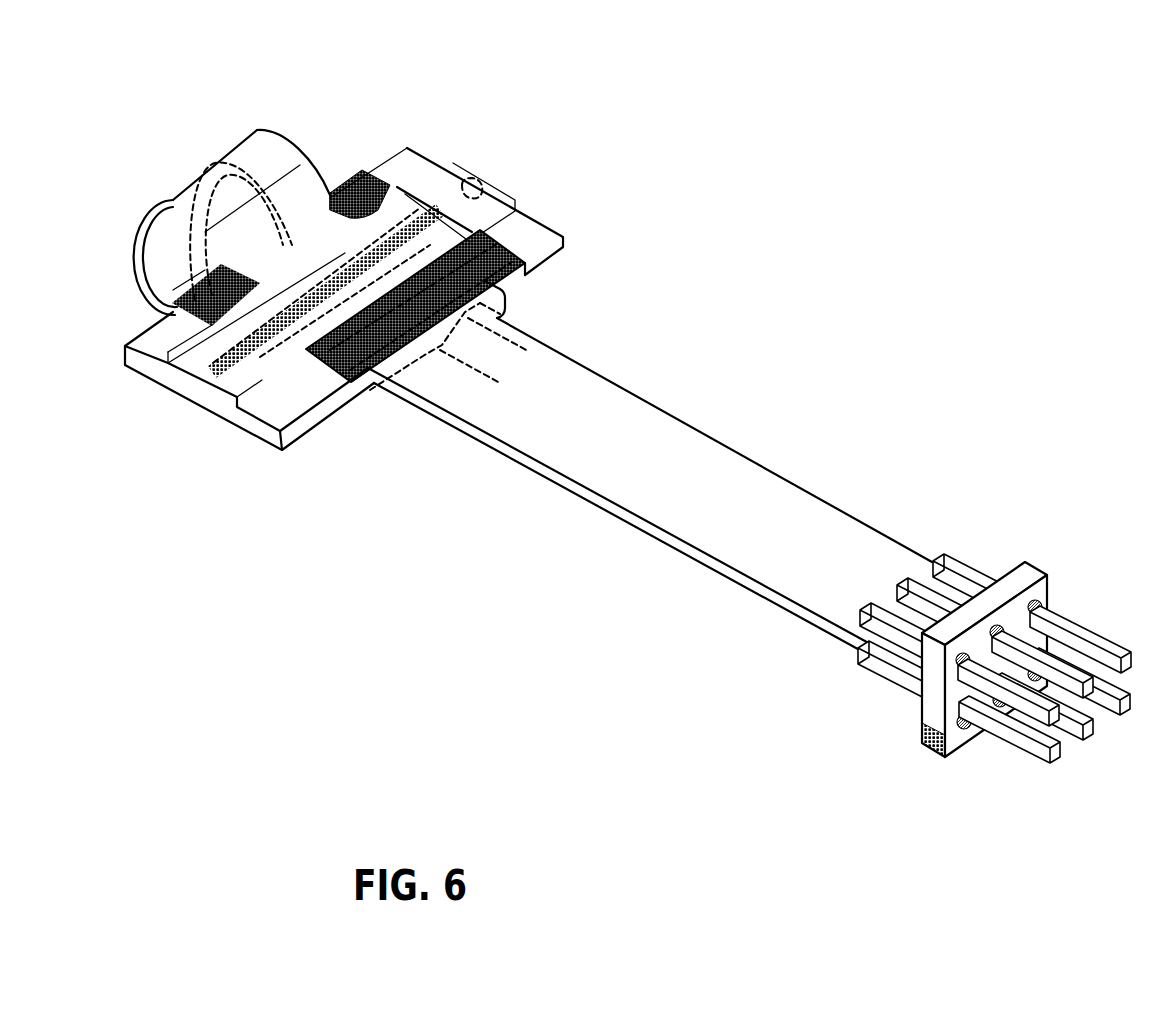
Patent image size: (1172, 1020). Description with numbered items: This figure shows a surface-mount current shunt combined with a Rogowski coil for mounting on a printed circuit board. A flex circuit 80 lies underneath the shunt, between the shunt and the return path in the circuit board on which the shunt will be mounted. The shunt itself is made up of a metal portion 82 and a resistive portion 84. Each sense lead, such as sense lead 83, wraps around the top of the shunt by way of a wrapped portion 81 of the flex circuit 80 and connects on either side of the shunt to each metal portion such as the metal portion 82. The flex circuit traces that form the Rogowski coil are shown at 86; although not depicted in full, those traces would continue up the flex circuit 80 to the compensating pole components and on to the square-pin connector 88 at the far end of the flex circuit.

The flex circuit 80 is at (580, 486).
The portion of flex circuit 81 is at (258, 134).
The metal portion 82 is at (563, 248).
The sense lead 83 is at (213, 375).
The resistive portion 84 is at (497, 267).
The flex circuit traces forming the Rogowski coil 86 is at (377, 363).
The square-pin connector 88 is at (1030, 564).